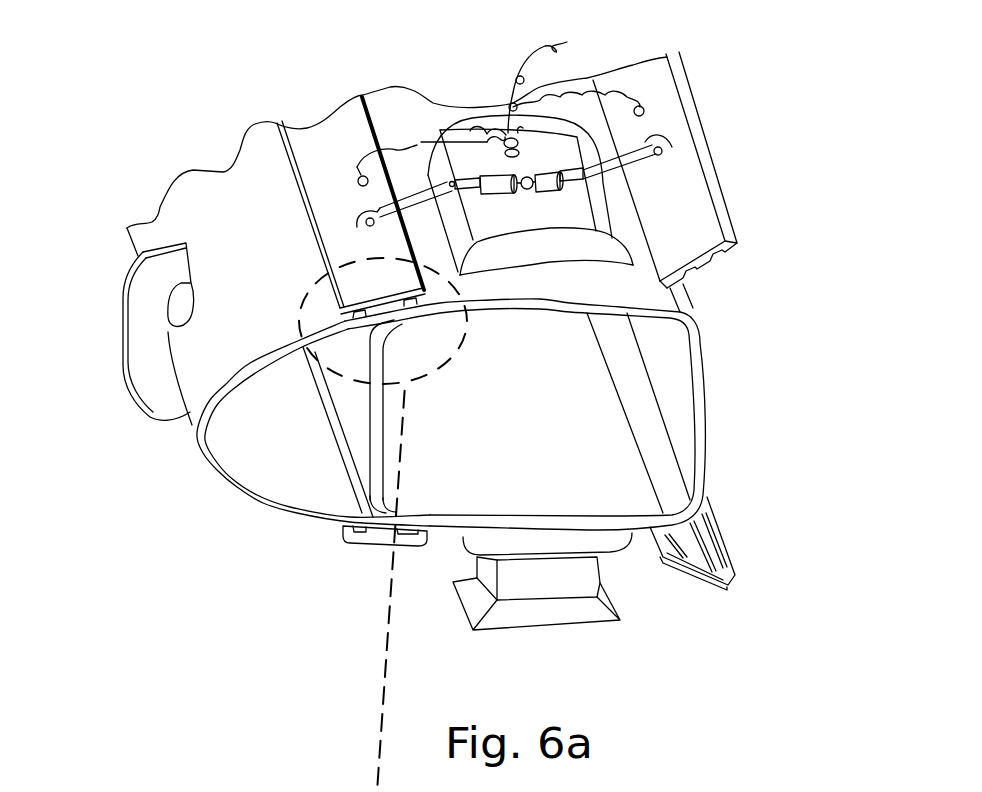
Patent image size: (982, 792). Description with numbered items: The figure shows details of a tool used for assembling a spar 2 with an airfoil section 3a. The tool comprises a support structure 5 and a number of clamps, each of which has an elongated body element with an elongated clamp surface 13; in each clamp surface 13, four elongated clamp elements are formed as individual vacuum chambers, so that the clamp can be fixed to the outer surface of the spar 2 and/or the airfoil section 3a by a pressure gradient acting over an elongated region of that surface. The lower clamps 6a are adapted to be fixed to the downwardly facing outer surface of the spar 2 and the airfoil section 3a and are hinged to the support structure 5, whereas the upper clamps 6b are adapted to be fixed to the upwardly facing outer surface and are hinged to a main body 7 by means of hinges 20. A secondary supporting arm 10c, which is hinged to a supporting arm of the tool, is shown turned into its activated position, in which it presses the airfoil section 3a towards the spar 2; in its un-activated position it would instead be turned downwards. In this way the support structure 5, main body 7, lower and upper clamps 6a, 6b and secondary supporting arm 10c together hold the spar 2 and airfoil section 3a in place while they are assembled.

The spar 2 is at (433, 535).
The airfoil section 3a is at (264, 521).
The support structure 5 is at (582, 574).
The lower clamps 6a is at (380, 543).
The upper clamps 6b is at (331, 143).
The main body 7 is at (572, 216).
The secondary supporting arm 10c is at (143, 409).
The clamp surface 13 is at (713, 291).
The hinges 20 is at (408, 188).